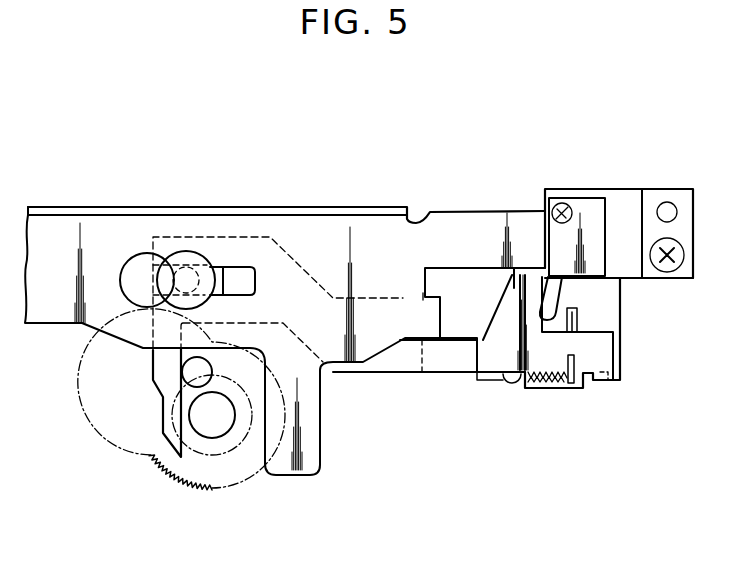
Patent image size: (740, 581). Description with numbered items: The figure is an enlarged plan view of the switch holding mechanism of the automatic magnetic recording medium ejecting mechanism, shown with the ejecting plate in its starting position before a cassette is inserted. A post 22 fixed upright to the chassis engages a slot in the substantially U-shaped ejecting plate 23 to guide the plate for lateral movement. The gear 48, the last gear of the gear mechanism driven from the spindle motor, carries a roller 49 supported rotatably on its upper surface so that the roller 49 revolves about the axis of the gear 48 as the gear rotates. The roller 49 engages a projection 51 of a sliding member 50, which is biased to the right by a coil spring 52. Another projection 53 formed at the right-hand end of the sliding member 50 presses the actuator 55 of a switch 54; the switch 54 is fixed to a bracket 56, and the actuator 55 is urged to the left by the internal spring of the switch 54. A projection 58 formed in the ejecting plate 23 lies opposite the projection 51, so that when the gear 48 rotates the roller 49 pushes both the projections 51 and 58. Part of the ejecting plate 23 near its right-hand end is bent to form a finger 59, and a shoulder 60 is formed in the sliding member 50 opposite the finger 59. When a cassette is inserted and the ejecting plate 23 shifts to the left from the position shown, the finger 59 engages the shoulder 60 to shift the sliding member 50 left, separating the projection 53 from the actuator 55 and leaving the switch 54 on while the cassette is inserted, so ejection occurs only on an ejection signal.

The post 22 is at (185, 252).
The ejecting plate 23 is at (213, 207).
The gear 48 is at (173, 483).
The roller 49 is at (200, 358).
The sliding member 50 is at (453, 374).
The projection 51 is at (163, 378).
The coil spring 52 is at (513, 392).
The projection 53 is at (507, 246).
The switch 54 is at (606, 240).
The actuator 55 is at (563, 292).
The bracket 56 is at (696, 234).
The projection 58 is at (285, 470).
The finger 59 is at (423, 297).
The shoulder 60 is at (403, 298).